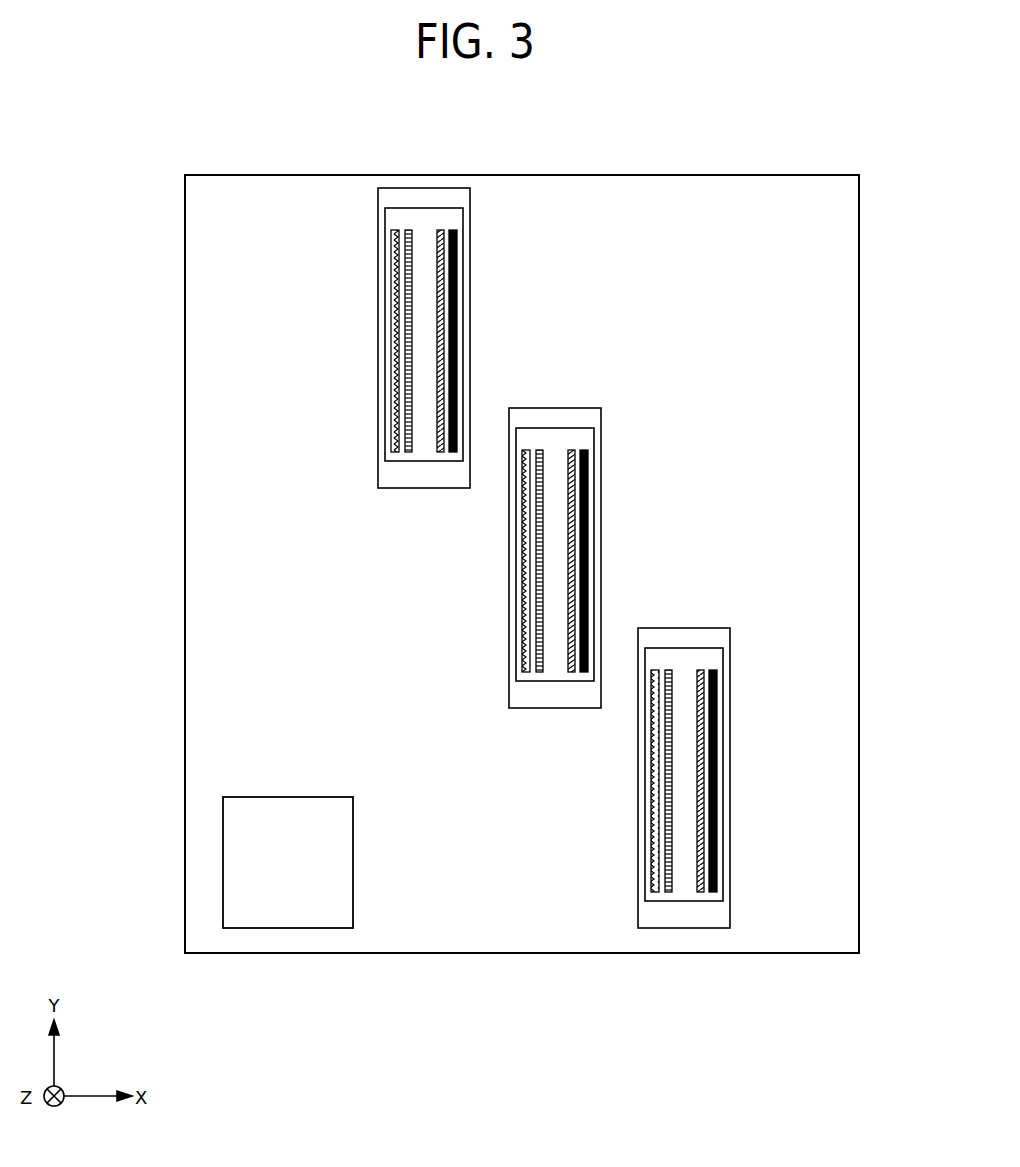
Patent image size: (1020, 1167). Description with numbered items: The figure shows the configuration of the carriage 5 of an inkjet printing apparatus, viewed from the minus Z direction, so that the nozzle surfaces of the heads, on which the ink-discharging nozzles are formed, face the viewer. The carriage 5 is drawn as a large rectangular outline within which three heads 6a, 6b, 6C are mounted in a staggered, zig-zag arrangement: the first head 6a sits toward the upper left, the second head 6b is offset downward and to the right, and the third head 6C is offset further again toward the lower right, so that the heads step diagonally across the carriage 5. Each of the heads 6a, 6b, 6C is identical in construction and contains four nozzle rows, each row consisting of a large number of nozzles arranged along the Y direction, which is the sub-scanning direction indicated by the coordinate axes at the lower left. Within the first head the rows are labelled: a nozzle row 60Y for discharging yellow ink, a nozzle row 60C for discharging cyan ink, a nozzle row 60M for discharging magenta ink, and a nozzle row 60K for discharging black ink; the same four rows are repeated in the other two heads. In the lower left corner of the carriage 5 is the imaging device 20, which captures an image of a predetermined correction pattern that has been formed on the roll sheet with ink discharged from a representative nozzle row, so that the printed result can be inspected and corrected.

The carriage 5 is at (860, 226).
The head 6a is at (325, 300).
The head 6b is at (509, 557).
The head 6C is at (638, 755).
The nozzle row 60Y is at (394, 229).
The nozzle row 60C is at (408, 229).
The nozzle row 60M is at (440, 229).
The nozzle row 60K is at (454, 229).
The imaging device 20 is at (223, 860).